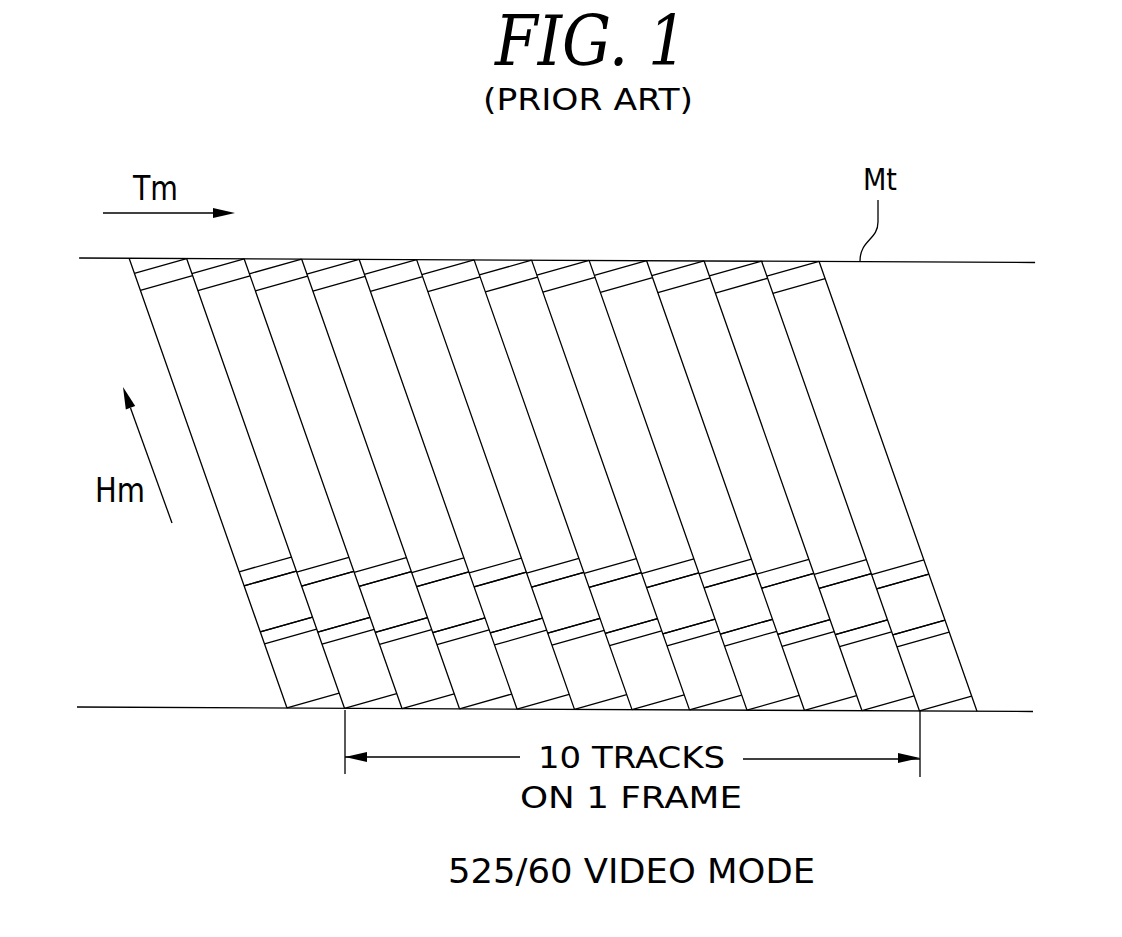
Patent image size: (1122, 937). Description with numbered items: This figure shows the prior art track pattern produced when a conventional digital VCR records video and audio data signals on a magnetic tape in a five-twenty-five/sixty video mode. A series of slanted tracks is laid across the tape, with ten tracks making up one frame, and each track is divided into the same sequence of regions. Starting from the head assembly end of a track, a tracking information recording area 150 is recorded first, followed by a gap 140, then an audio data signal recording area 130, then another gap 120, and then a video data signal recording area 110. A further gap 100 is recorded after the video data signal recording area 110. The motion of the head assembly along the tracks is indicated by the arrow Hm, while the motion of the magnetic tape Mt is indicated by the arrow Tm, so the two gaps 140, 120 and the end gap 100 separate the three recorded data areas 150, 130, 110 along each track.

The gap 100 is at (808, 272).
The video data signal recording area 110 is at (847, 403).
The gap 120 is at (910, 568).
The audio data signal recording area 130 is at (922, 600).
The gap 140 is at (933, 625).
The tracking information recording area 150 is at (952, 668).